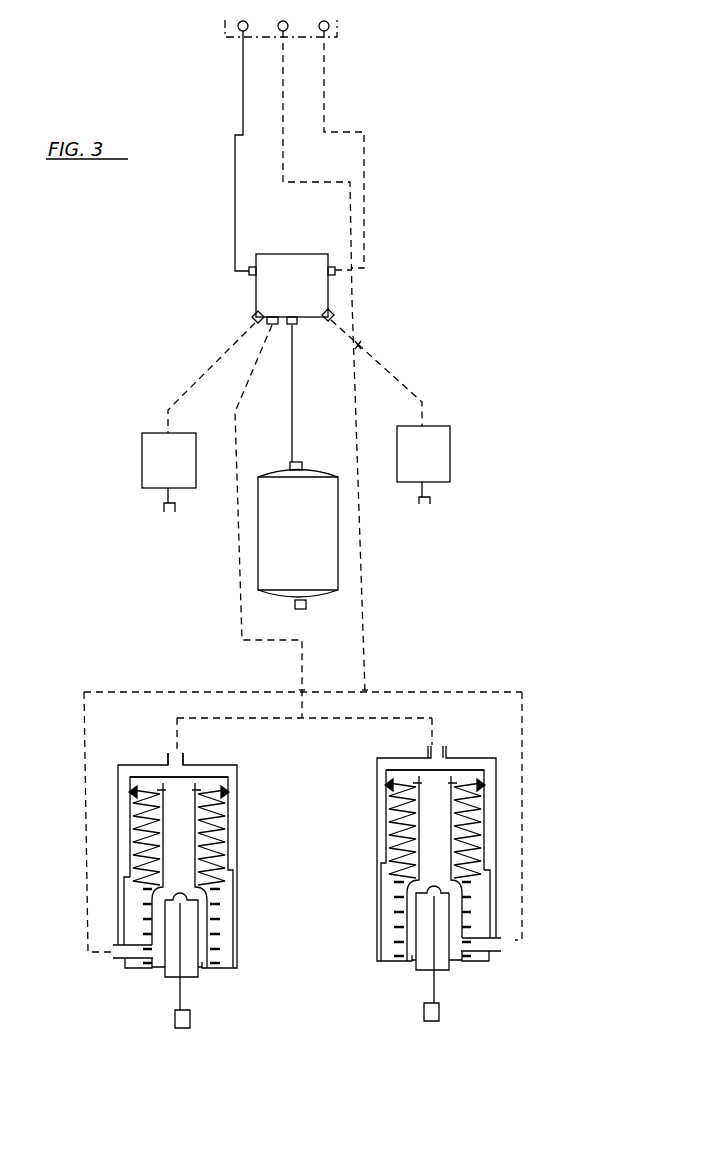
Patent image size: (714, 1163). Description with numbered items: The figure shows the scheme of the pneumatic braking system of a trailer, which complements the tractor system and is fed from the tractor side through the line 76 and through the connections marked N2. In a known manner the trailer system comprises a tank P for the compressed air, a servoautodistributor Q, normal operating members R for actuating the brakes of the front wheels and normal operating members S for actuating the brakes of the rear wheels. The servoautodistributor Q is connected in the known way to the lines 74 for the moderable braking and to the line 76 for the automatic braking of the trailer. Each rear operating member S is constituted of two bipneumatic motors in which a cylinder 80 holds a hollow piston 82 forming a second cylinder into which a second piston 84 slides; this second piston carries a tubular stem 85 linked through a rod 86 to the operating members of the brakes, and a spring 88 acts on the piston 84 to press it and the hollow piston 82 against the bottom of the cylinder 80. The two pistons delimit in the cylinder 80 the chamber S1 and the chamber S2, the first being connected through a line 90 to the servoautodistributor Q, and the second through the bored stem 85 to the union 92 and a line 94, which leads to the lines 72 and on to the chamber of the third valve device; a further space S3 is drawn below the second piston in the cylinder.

The nitrogen gas supply N2 is at (297, 26).
The line 76 is at (240, 76).
The lines for the moderable braking 74 is at (325, 76).
The lines 72 is at (285, 87).
The servoautodistributor Q is at (262, 293).
The normal operating members R is at (152, 467).
The tank P is at (328, 552).
The line 90 is at (300, 670).
The line 94 is at (398, 692).
The normal operating members S is at (247, 864).
The chamber S1 is at (205, 770).
The chamber S2 is at (115, 780).
The lower chamber S3 is at (388, 937).
The hollow piston 82 is at (488, 767).
The second piston 84 is at (388, 788).
The spring 88 is at (477, 817).
The tubular stem 85 is at (477, 841).
The cylinder 80 is at (380, 902).
The union 92 is at (114, 957).
The rod 86 is at (183, 990).